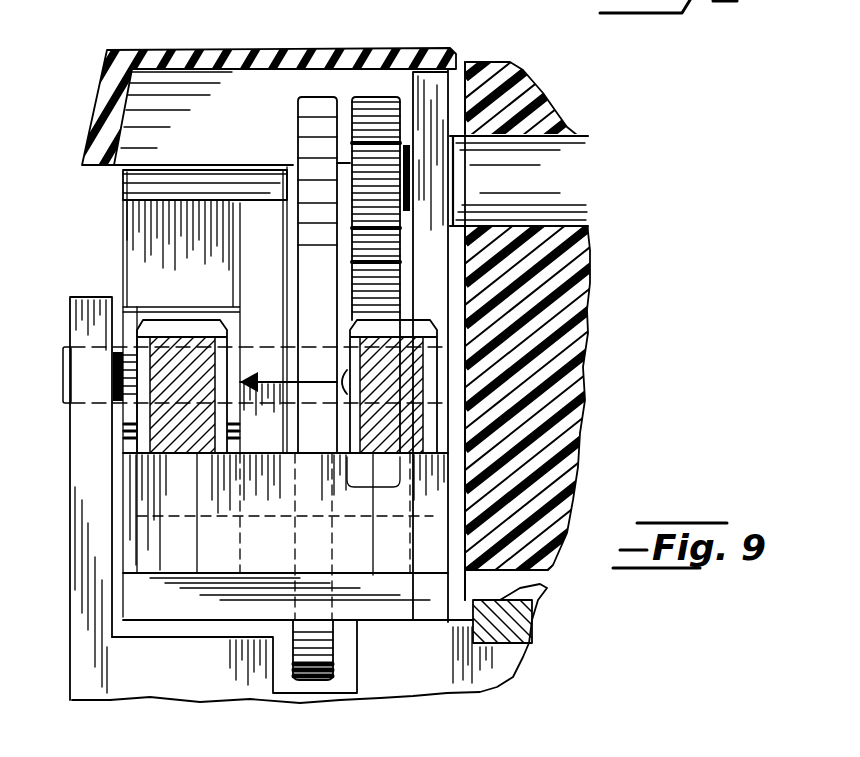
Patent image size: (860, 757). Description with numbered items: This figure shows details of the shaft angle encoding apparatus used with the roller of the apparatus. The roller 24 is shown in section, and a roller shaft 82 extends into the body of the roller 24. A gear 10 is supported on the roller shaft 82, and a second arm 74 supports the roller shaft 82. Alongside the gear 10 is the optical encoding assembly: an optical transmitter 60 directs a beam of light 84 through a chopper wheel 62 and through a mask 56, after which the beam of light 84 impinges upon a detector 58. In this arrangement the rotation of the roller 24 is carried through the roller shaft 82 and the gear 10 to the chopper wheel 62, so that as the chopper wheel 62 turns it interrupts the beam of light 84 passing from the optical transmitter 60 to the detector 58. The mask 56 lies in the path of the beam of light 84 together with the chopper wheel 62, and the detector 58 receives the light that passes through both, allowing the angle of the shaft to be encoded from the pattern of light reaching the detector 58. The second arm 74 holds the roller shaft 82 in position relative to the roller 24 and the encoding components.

The gear 10 is at (375, 97).
The roller 24 is at (552, 125).
The mask 56 is at (250, 183).
The detector 58 is at (160, 433).
The optical transmitter 60 is at (373, 421).
The chopper wheel 62 is at (318, 107).
The second arm 74 is at (445, 93).
The roller shaft 82 is at (572, 182).
The beam of light 84 is at (258, 378).